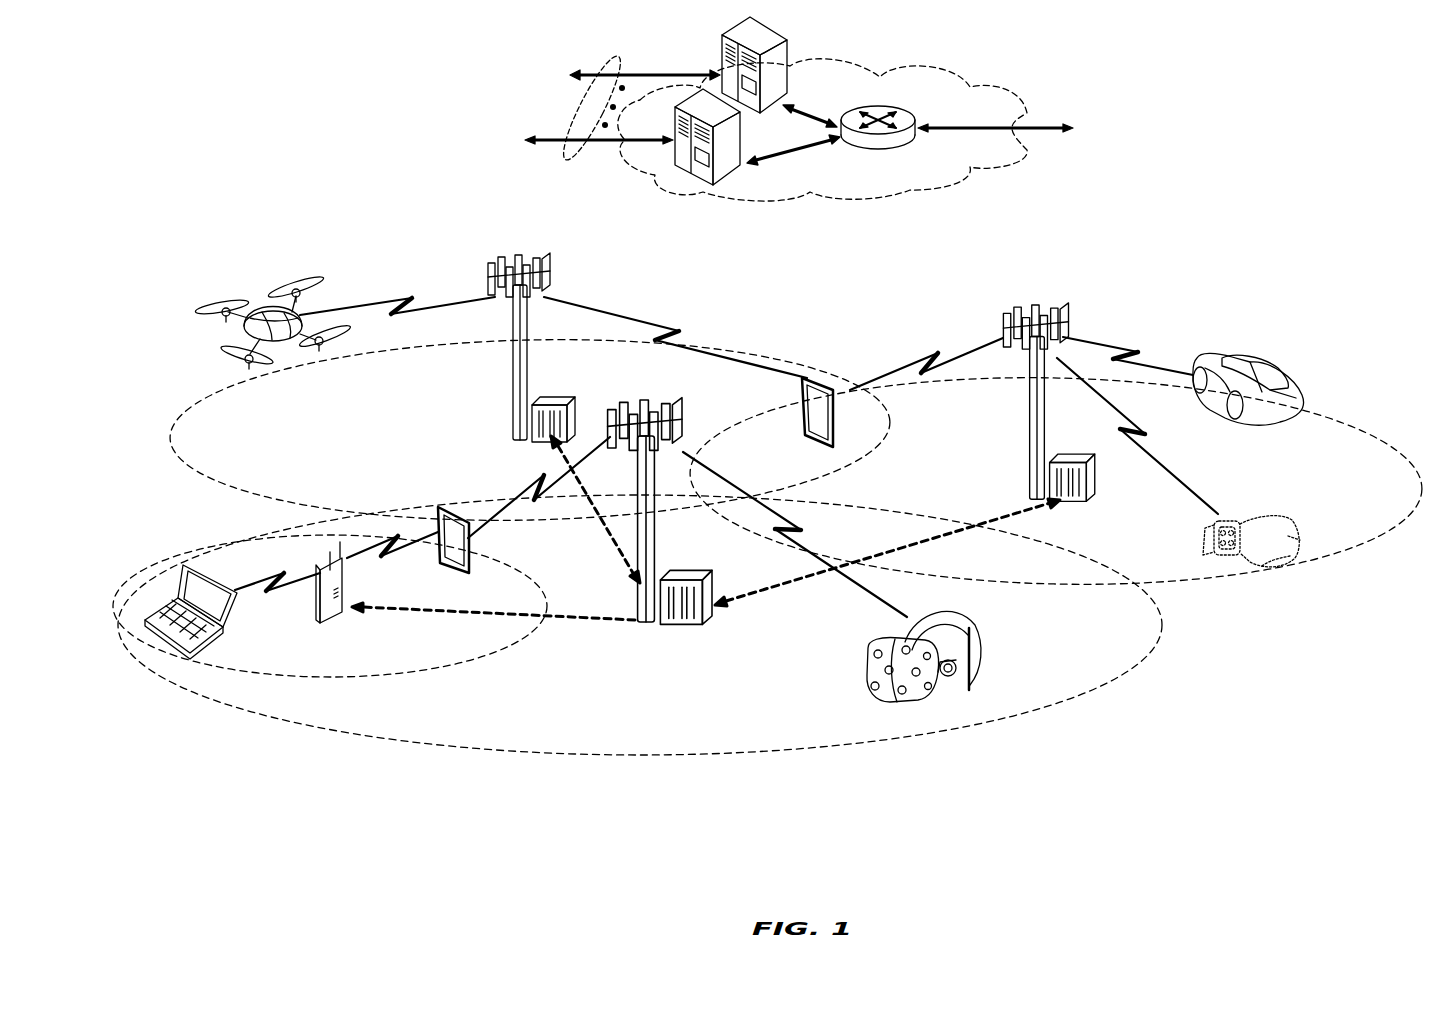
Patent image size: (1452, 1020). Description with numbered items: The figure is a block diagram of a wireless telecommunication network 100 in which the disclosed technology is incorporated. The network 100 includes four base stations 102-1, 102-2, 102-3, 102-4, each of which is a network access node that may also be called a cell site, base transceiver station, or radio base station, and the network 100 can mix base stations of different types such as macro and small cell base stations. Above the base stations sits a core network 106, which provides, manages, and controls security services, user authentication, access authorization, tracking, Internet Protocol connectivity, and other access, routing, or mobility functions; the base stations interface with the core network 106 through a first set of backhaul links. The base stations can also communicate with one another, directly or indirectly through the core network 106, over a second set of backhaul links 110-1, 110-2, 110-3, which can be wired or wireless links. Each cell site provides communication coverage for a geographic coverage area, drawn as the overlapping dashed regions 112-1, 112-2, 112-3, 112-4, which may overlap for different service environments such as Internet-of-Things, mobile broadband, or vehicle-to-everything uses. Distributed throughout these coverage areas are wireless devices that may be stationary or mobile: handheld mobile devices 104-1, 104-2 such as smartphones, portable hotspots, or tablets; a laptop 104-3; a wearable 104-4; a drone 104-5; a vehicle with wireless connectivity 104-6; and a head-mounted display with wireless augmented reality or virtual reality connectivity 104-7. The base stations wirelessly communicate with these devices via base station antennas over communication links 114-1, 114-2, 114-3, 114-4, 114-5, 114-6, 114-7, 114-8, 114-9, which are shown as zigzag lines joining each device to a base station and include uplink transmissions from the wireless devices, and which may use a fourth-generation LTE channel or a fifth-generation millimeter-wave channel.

The wireless telecommunication network 100 is at (1322, 121).
The core network 106 is at (911, 192).
The base station 102-1 is at (648, 633).
The base station 102-2 is at (510, 390).
The base station 102-3 is at (1027, 418).
The base station 102-4 is at (318, 612).
The handheld mobile device 104-1 is at (472, 546).
The handheld mobile device 104-2 is at (800, 416).
The laptop 104-3 is at (178, 653).
The wearable 104-4 is at (1230, 518).
The drone 104-5 is at (282, 348).
The vehicle with wireless connectivity 104-6 is at (1268, 370).
The head-mounted display 104-7 is at (985, 640).
The backhaul link 110-1 is at (392, 616).
The backhaul link 110-2 is at (955, 548).
The backhaul link 110-3 is at (610, 540).
The geographic coverage area 112-1 is at (575, 758).
The geographic coverage area 112-2 is at (452, 672).
The geographic coverage area 112-3 is at (232, 490).
The geographic coverage area 112-4 is at (1313, 413).
The communication link 114-1 is at (808, 536).
The communication link 114-2 is at (530, 482).
The communication link 114-3 is at (268, 593).
The communication link 114-4 is at (408, 558).
The communication link 114-5 is at (395, 298).
The communication link 114-6 is at (685, 332).
The communication link 114-7 is at (920, 354).
The communication link 114-8 is at (1152, 458).
The communication link 114-9 is at (1130, 346).